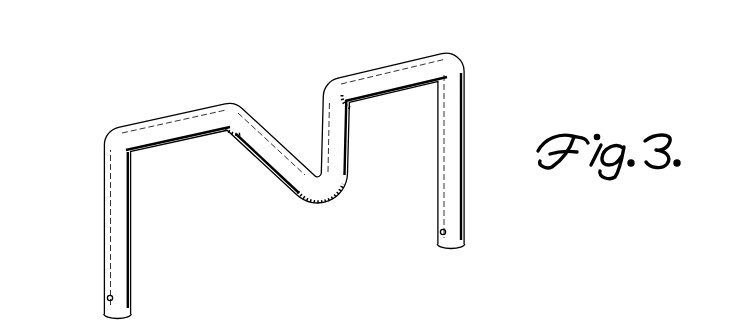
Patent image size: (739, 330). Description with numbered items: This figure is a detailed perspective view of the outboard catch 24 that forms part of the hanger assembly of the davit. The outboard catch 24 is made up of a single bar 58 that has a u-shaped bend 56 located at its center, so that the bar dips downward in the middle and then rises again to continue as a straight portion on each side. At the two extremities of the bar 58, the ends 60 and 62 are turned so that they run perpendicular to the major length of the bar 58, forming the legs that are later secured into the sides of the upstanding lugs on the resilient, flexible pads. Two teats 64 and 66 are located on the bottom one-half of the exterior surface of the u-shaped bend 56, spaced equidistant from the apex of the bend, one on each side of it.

The outboard catch 24 is at (163, 112).
The u-shaped bend 56 is at (313, 173).
The bar 58 is at (398, 73).
The end 60 is at (113, 223).
The end 62 is at (448, 143).
The teat 64 is at (298, 198).
The teat 66 is at (338, 190).